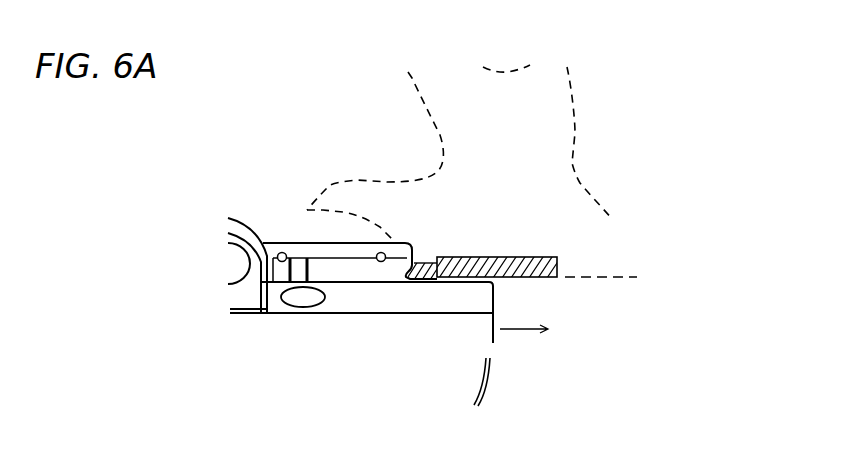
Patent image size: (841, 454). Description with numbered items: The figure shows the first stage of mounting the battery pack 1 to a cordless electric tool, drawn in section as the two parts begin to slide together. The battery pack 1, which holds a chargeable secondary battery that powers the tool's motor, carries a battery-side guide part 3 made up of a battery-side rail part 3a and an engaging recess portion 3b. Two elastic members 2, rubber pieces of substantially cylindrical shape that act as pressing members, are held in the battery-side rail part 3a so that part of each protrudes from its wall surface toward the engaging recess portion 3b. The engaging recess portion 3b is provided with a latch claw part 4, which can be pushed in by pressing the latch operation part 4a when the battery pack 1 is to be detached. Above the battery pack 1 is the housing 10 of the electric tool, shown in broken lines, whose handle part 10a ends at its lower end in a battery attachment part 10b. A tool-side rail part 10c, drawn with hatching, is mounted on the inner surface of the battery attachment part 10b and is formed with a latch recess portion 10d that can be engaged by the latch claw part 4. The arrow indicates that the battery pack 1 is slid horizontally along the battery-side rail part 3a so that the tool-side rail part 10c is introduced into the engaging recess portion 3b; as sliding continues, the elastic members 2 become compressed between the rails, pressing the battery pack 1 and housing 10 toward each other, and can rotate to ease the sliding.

The battery pack 1 is at (490, 387).
The elastic member 2 is at (280, 253).
The battery-side guide part 3 is at (360, 331).
The battery-side rail part 3a is at (338, 252).
The engaging recess portion 3b is at (372, 272).
The latch claw part 4 is at (216, 299).
The latch operation part 4a is at (240, 258).
The housing 10 is at (455, 227).
The handle part 10a is at (573, 133).
The battery attachment part 10b is at (340, 182).
The tool-side rail part 10c is at (532, 272).
The latch recess portion 10d is at (425, 265).